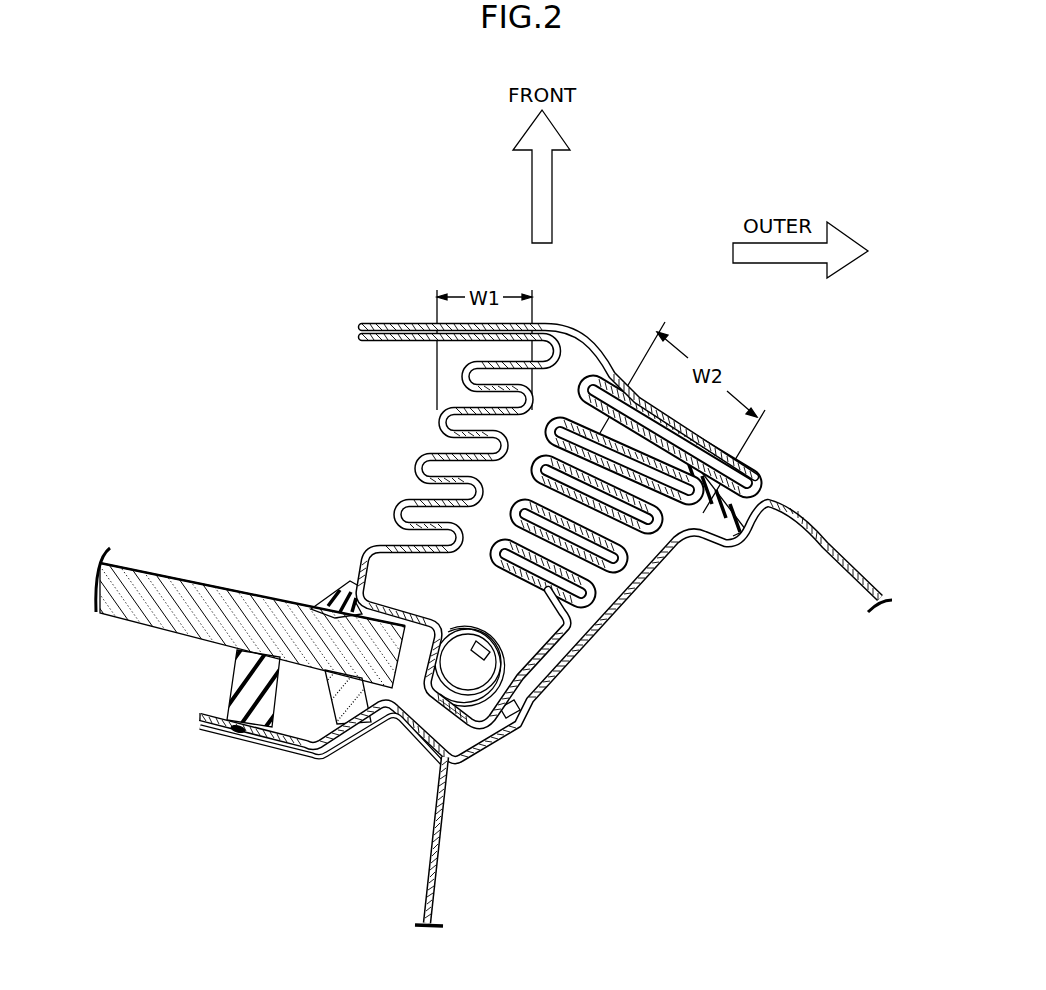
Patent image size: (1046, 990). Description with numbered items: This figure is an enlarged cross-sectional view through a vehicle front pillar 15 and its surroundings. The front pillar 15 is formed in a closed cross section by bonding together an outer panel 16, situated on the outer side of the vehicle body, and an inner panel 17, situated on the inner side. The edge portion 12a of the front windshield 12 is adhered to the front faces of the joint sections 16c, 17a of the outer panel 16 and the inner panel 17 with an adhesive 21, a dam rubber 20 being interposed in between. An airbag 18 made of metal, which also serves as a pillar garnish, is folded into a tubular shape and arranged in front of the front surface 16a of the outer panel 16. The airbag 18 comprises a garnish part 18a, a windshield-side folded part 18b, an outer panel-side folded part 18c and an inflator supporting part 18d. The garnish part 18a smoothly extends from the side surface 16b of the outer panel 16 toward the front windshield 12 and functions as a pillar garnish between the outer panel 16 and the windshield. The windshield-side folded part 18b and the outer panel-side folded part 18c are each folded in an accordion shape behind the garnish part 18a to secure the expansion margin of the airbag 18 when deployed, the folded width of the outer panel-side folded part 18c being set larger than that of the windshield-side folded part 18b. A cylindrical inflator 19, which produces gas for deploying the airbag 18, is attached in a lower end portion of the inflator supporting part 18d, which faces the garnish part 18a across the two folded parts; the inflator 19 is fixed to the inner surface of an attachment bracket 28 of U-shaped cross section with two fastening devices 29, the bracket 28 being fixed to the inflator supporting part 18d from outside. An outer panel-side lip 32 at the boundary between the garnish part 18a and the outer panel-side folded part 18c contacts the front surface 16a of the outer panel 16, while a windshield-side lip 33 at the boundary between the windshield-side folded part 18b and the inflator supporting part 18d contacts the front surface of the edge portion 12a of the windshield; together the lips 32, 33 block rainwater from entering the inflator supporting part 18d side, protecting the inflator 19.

The front windshield 12 is at (160, 572).
The edge portion 12a is at (262, 614).
The front pillar 15 is at (546, 705).
The outer panel 16 is at (546, 662).
The front surface 16a is at (668, 551).
The side surface 16b is at (813, 527).
The joint section 16c is at (296, 733).
The inner panel 17 is at (398, 820).
The joint section 17a is at (273, 747).
The airbag 18 is at (545, 537).
The garnish part 18a is at (574, 336).
The windshield-side folded part 18b is at (417, 455).
The outer panel-side folded part 18c is at (623, 577).
The inflator supporting part 18d is at (452, 708).
The inflator 19 is at (465, 640).
The dam rubber 20 is at (236, 690).
The adhesive 21 is at (357, 727).
The attachment bracket 28 is at (487, 728).
The fastening device 29 is at (503, 660).
The outer panel-side lip 32 is at (737, 523).
The windshield-side lip 33 is at (343, 593).